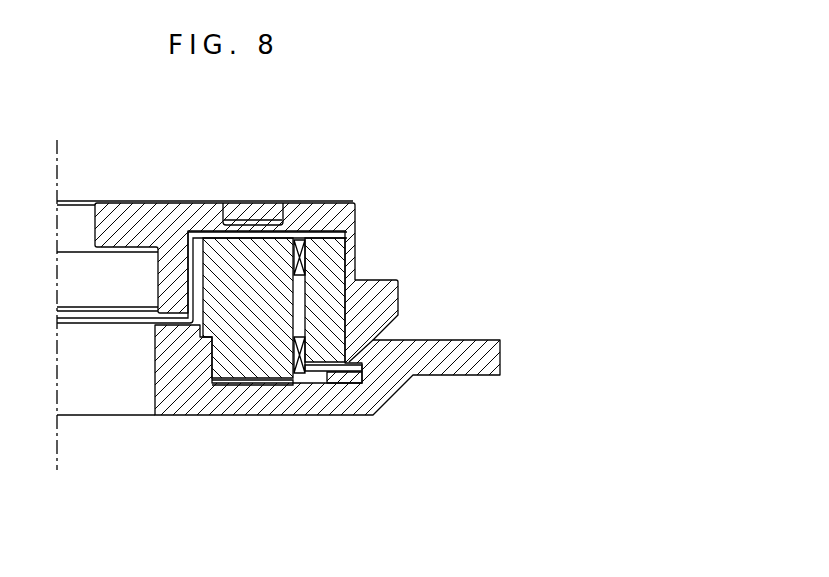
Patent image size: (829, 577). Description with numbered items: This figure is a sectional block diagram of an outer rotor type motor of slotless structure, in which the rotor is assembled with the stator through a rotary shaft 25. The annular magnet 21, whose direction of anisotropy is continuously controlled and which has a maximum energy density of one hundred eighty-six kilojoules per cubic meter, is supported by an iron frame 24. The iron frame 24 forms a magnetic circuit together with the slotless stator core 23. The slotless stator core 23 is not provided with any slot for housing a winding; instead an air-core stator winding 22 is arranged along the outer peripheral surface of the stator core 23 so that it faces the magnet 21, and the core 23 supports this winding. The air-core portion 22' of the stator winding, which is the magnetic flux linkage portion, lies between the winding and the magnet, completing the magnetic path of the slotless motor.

The annular magnet 21 is at (328, 262).
The air-core stator winding 22 is at (314, 196).
The air-core portion of the stator winding 22' is at (284, 396).
The slotless stator core 23 is at (213, 252).
The iron frame 24 is at (344, 222).
The rotary shaft 25 is at (90, 380).